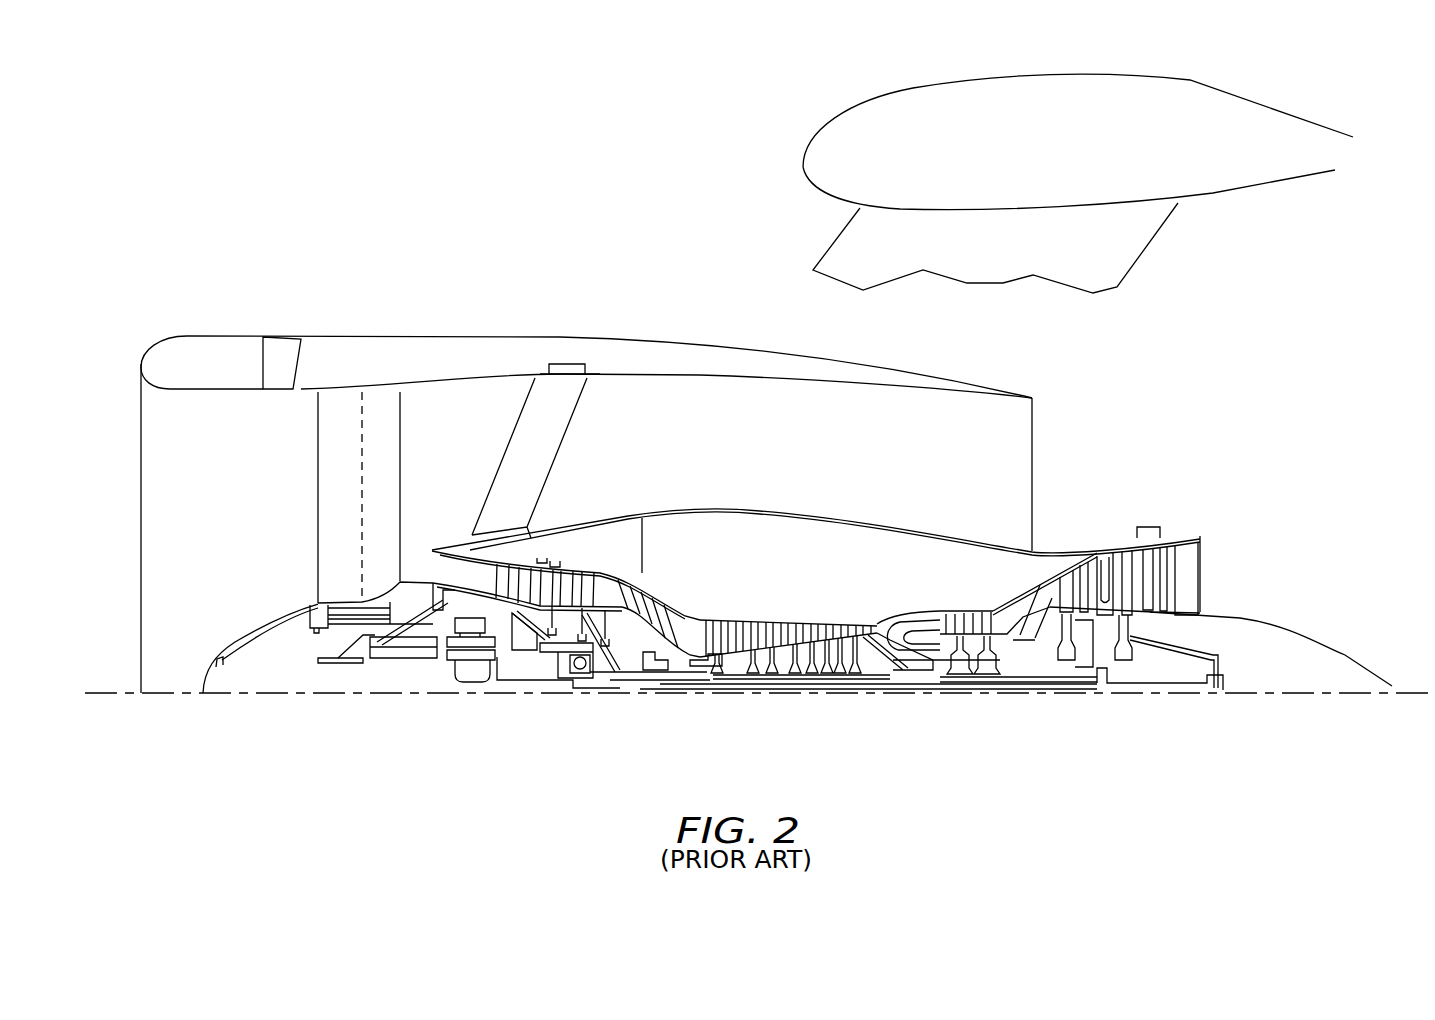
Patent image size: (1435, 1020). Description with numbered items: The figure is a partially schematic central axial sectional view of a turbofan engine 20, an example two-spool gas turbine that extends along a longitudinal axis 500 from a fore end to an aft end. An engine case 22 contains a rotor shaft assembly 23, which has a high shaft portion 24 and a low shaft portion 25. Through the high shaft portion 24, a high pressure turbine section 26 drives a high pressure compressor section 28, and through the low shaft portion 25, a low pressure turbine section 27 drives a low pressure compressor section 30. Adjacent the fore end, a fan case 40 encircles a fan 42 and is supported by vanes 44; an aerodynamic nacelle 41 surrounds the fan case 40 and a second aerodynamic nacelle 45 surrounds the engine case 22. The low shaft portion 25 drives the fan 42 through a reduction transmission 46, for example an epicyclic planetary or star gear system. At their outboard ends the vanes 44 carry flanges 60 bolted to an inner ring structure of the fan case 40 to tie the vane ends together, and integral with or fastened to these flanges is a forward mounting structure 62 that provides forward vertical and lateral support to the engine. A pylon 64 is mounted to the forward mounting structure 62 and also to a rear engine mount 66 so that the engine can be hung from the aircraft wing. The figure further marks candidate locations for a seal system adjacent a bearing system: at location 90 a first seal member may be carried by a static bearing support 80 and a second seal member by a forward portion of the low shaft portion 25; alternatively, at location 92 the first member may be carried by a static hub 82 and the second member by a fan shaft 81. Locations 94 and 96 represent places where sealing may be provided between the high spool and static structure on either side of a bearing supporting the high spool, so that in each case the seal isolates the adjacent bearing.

The turbofan engine 20 is at (486, 234).
The engine case 22 is at (824, 596).
The rotor shaft assembly 23 is at (724, 684).
The high shaft portion 24 is at (906, 679).
The low shaft portion 25 is at (865, 680).
The high pressure turbine section 26 is at (985, 611).
The low pressure turbine section 27 is at (1100, 550).
The high pressure compressor section 28 is at (776, 617).
The low pressure compressor section 30 is at (600, 575).
The fan case 40 is at (385, 366).
The nacelle 41 is at (474, 336).
The fan 42 is at (298, 542).
The vanes 44 is at (546, 430).
The nacelle 45 is at (918, 518).
The reduction transmission 46 is at (473, 677).
The flanges 60 is at (572, 380).
The forward mounting structure 62 is at (568, 358).
The pylon 64 is at (1148, 286).
The rear engine mount 66 is at (1150, 525).
The static bearing support 80 is at (578, 678).
The fan shaft 81 is at (352, 664).
The static hub 82 is at (408, 615).
The location 90 is at (602, 678).
The location 92 is at (366, 670).
The location 94 is at (650, 652).
The location 96 is at (695, 658).
The longitudinal axis 500 is at (121, 703).